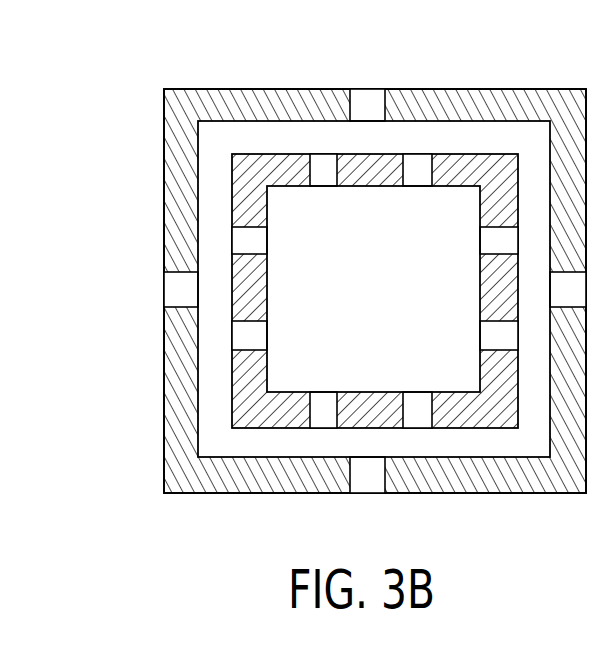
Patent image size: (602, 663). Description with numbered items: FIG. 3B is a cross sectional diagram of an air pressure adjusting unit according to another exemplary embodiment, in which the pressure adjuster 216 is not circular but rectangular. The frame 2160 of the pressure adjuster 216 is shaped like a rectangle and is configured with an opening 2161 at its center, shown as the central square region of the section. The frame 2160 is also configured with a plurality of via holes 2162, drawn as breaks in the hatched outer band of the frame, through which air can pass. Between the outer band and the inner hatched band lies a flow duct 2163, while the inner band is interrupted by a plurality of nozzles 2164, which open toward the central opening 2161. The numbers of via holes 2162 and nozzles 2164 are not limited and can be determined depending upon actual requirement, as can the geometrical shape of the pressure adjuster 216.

The pressure adjuster 216 is at (144, 70).
The frame 2160 is at (408, 87).
The opening 2161 is at (405, 308).
The via holes 2162 is at (177, 296).
The flow duct 2163 is at (247, 137).
The nozzles 2164 is at (240, 226).